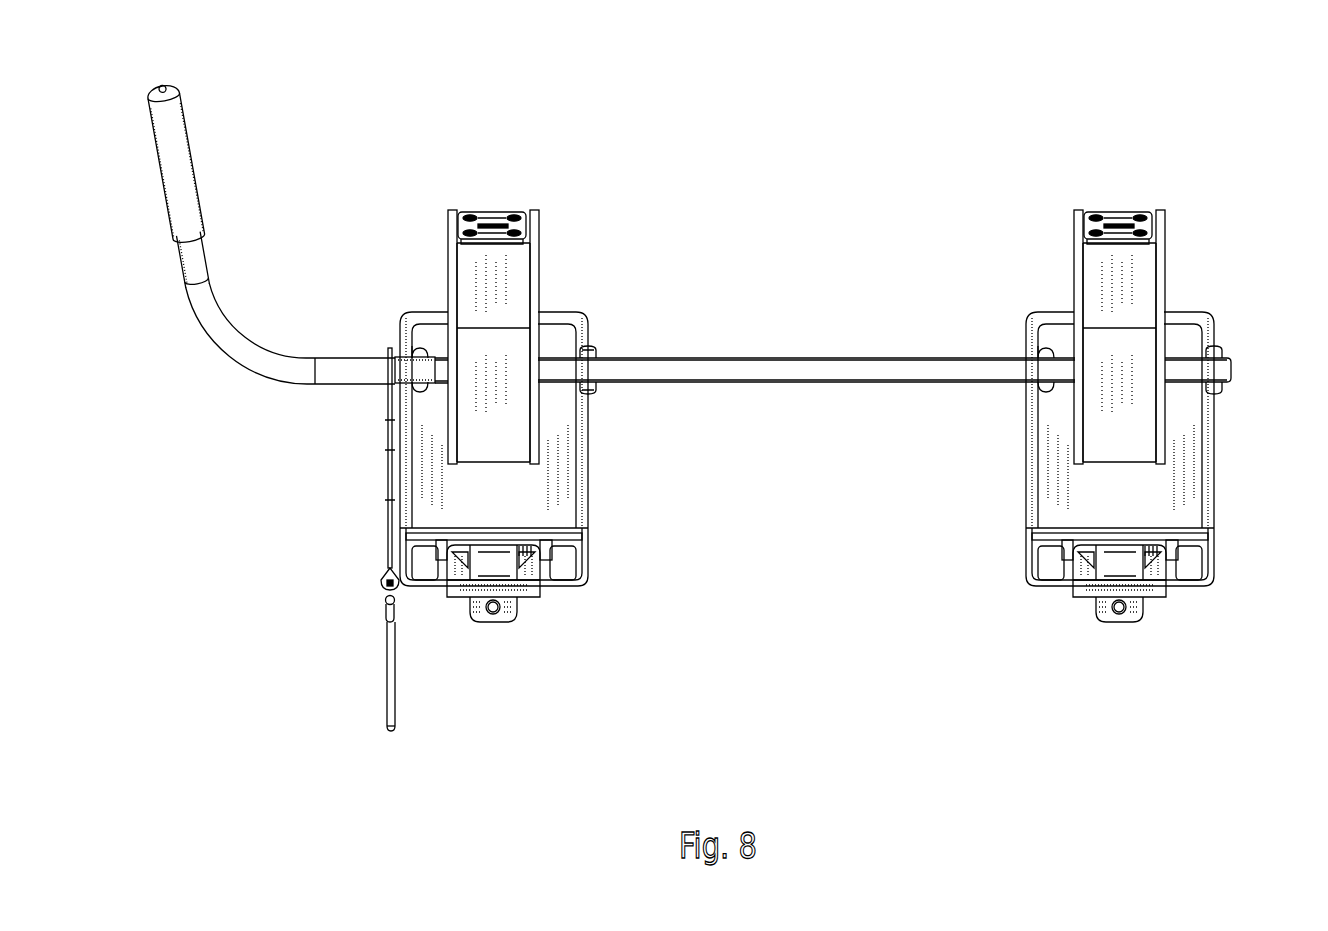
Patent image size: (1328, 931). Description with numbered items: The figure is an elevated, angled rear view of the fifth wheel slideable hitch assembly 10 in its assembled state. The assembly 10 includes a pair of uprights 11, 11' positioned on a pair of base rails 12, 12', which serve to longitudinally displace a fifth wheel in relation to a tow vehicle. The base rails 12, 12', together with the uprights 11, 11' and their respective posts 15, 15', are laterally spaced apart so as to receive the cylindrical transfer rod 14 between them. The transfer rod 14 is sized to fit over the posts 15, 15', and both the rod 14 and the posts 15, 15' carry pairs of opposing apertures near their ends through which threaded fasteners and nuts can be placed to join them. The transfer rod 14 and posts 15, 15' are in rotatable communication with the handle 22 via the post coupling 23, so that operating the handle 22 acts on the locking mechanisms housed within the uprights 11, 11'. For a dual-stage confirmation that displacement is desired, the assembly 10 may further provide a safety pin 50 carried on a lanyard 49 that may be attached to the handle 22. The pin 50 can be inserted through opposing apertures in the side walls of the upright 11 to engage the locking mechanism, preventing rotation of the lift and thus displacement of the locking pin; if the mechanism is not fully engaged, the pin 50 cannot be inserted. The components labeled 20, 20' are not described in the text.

The fifth wheel slideable hitch assembly 10 is at (722, 99).
The upright 11 is at (1150, 306).
The upright 11' is at (525, 309).
The base rail 12 is at (1120, 591).
The base rail 12' is at (494, 591).
The transfer rod 14 is at (808, 372).
The post 15 is at (1226, 363).
The post 15' is at (569, 325).
The housing 20 is at (1120, 420).
The housing 20' is at (494, 420).
The handle 22 is at (178, 115).
The post coupling 23 is at (352, 358).
The lanyard 49 is at (386, 536).
The safety pin 50 is at (387, 668).